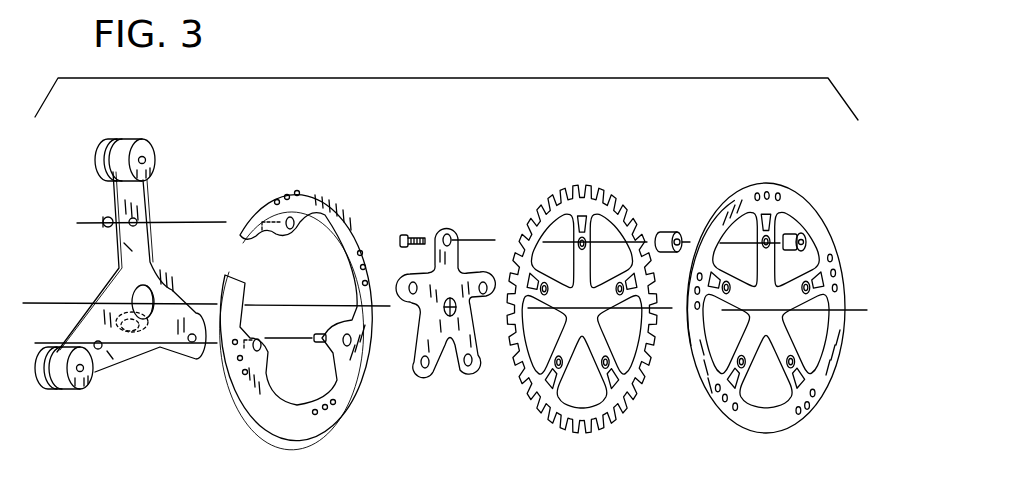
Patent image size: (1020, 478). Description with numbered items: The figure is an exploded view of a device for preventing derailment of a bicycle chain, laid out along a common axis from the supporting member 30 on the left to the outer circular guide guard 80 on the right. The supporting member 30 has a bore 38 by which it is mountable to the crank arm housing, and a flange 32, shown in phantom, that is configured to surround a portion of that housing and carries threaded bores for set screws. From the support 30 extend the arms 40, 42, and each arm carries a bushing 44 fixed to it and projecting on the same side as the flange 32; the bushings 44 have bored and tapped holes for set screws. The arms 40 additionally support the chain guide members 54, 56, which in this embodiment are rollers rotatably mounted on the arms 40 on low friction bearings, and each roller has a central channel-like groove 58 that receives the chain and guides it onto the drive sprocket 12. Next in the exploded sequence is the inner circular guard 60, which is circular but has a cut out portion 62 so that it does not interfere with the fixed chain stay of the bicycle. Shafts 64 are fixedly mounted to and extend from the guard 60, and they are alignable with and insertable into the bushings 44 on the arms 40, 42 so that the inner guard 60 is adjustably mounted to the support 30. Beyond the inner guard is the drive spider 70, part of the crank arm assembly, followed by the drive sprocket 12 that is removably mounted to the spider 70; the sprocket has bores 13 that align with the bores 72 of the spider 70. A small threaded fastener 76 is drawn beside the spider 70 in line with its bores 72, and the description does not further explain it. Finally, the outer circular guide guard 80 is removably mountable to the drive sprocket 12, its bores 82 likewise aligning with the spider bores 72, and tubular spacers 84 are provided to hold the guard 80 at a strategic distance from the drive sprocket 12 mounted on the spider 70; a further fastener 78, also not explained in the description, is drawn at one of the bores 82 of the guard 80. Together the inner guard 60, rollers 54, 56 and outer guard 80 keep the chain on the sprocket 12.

The drive sprocket 12 is at (588, 208).
The bores 13 is at (617, 290).
The supporting member 30 is at (118, 280).
The flange 32 is at (163, 352).
The bore 38 is at (150, 287).
The extending arm 40 is at (128, 247).
The extending arm 42 is at (147, 288).
The bushings 44 is at (105, 213).
The chain guide member 54 is at (142, 148).
The chain guide member 56 is at (92, 382).
The groove 58 is at (125, 138).
The inner circular guard 60 is at (343, 205).
The cut out portion 62 is at (238, 247).
The shafts 64 is at (265, 230).
The drive spider 70 is at (452, 347).
The bores 72 is at (490, 275).
The screw 76 is at (408, 232).
The screw 78 is at (803, 233).
The outer circular guide guard 80 is at (793, 202).
The bores 82 is at (770, 250).
The tubular spacers 84 is at (663, 233).